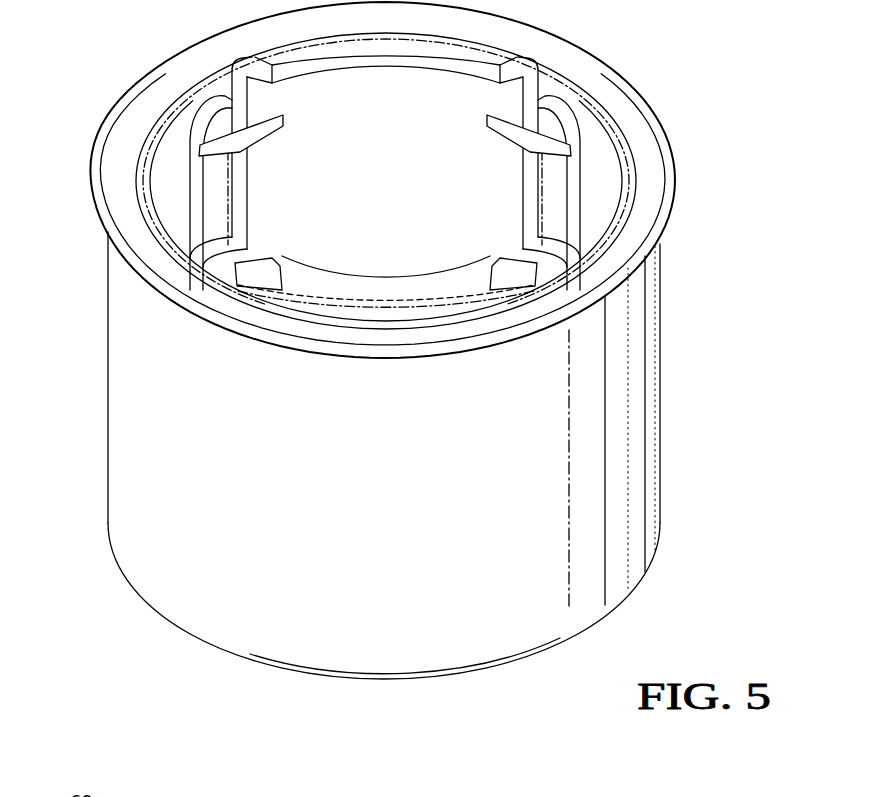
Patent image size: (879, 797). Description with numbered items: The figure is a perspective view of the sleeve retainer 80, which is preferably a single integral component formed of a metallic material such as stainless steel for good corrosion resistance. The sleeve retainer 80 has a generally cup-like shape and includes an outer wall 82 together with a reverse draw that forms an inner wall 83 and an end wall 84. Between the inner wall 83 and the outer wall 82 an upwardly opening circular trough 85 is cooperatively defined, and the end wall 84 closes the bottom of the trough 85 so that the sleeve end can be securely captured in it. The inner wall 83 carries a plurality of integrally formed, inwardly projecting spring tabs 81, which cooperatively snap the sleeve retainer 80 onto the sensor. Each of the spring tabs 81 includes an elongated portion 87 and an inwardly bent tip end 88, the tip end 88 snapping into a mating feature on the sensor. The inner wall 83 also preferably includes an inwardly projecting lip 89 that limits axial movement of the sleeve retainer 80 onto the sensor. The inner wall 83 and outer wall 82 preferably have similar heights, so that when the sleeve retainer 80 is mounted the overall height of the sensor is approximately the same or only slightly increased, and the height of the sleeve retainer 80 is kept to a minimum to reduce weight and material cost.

The sleeve retainer 80 is at (658, 312).
The spring tabs 81 is at (246, 257).
The outer wall 82 is at (134, 399).
The inner wall 83 is at (642, 190).
The end wall 84 is at (170, 618).
The circular trough 85 is at (128, 197).
The elongated portion 87 is at (270, 133).
The inwardly bent tip end 88 is at (492, 111).
The inwardly projecting lip 89 is at (598, 140).